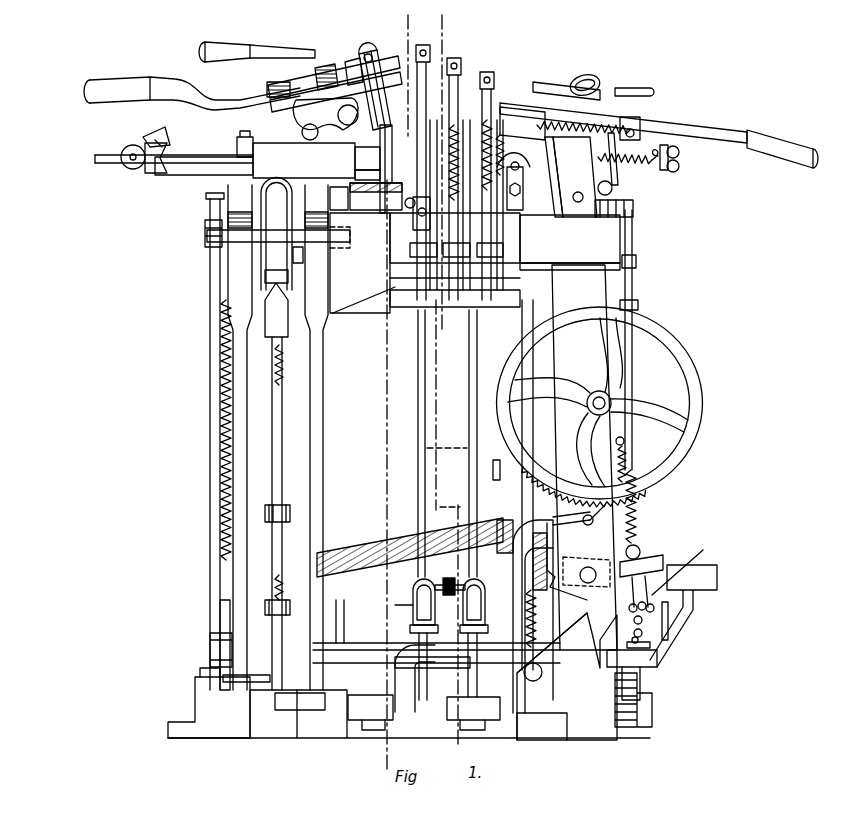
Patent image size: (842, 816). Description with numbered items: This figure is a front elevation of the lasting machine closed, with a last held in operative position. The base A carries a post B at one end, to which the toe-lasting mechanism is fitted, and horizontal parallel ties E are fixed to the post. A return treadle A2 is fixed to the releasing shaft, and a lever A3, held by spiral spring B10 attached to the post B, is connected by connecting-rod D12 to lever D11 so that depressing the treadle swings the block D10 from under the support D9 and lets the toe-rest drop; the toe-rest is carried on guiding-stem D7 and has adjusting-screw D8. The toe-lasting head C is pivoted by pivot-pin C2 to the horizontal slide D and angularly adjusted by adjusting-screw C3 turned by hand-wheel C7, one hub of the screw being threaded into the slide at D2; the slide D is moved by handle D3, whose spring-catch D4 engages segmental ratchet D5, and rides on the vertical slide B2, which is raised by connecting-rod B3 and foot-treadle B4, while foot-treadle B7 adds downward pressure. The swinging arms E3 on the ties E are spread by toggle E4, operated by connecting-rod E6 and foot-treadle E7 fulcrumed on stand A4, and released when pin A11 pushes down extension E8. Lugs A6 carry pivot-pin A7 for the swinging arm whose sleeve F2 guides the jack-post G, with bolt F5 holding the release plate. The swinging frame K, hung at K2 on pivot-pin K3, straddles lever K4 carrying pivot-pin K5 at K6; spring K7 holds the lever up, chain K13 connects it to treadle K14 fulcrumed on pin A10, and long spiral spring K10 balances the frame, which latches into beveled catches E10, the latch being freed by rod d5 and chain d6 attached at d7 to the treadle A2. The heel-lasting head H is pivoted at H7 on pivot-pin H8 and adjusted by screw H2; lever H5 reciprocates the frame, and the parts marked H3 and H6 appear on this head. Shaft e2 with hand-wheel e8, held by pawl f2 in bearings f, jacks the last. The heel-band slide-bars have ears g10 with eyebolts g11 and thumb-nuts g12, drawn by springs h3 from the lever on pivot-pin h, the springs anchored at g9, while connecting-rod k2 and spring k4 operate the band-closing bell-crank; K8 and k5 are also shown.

The base A is at (409, 676).
The foot-treadle A2 is at (717, 578).
The lever A3 is at (218, 612).
The stand A4 is at (432, 658).
The lugs A6 is at (552, 643).
The pivot-pin A7 is at (542, 672).
The pin A10 is at (652, 708).
The pin A11 is at (388, 601).
The post B is at (246, 420).
The vertical slide B2 is at (276, 234).
The adjustable connecting-rod B3 is at (290, 322).
The foot-treadle B4 is at (258, 700).
The foot-treadle B7 is at (300, 705).
The spiral spring B10 is at (221, 482).
The toe-lasting head C is at (352, 70).
The pivot-pin C2 is at (330, 62).
The adjusting-screw C3 is at (315, 84).
The hand-wheel C7 is at (300, 52).
The horizontal slide D is at (195, 174).
The screw-threaded position on slide D2 is at (302, 132).
The handle D3 is at (130, 162).
The spring-catch D4 is at (160, 135).
The segmental ratchet D5 is at (84, 157).
The guiding-stem D7 is at (384, 158).
The adjusting-screw D8 is at (367, 177).
The support D9 is at (372, 197).
The block or brace D10 is at (360, 263).
The lever D11 is at (205, 240).
The connecting-rod D12 is at (210, 292).
The horizontal parallel ties E is at (456, 216).
The swinging arms E3 is at (464, 179).
The toggle E4 is at (463, 186).
The connecting-rod E6 is at (447, 469).
The foot-treadle E7 is at (424, 687).
The extension E8 is at (415, 216).
The beveled catches E10 is at (636, 265).
The bearing or sleeve F2 is at (516, 518).
The bolt F5 is at (493, 470).
The jack-post G is at (534, 474).
The heel-lasting head H is at (659, 131).
The screw H2 is at (645, 86).
The block H3 is at (520, 105).
The lever H5 is at (592, 78).
The clamp H6 is at (636, 86).
The pivot location H7 is at (557, 150).
The pivot-pin H8 is at (520, 181).
The pivot-pin h is at (575, 200).
The spiral springs h3 is at (648, 168).
The spring attachment point g9 is at (634, 128).
The ears g10 is at (680, 168).
The eyebolts g11 is at (664, 170).
The thumb-nuts g12 is at (672, 172).
The swinging frame K is at (584, 457).
The hanging point K2 is at (600, 573).
The pivot-pin K3 is at (540, 630).
The lever K4 is at (640, 575).
The pivot-pin K5 is at (585, 564).
The pin location K6 is at (603, 592).
The spiral spring K7 is at (636, 525).
The cam K8 is at (585, 574).
The long spiral spring K10 is at (410, 546).
The chain connection K13 is at (642, 622).
The foot-treadle K14 is at (657, 660).
The connecting-rod k2 is at (481, 628).
The spiral spring k4 is at (461, 443).
The yoke k5 is at (437, 630).
The shaft e2 is at (611, 403).
The hand-wheel e8 is at (702, 403).
The rod d5 is at (632, 377).
The chain connection d6 is at (686, 566).
The connection point d7 is at (668, 615).
The bearings f is at (594, 511).
The pawl f2 is at (571, 514).